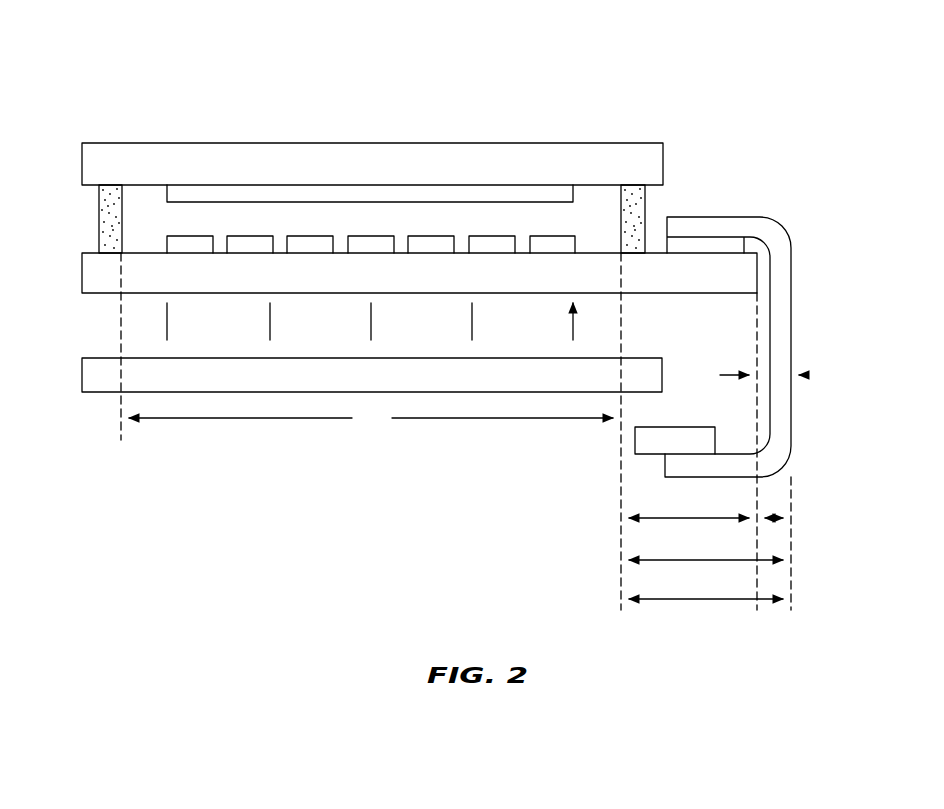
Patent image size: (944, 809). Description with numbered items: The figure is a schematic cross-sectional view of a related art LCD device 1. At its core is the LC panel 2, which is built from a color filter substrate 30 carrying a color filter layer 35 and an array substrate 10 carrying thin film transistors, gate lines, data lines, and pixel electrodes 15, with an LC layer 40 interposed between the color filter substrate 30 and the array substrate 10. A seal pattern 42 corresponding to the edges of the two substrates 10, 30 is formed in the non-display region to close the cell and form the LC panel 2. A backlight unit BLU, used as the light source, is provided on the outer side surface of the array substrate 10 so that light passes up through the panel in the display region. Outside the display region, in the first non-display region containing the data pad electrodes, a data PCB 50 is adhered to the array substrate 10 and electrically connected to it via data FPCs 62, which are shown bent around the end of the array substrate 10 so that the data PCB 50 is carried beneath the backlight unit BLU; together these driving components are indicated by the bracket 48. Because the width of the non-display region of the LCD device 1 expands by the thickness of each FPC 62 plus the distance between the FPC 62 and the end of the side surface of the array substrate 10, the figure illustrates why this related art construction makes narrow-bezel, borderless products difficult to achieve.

The LCD device 1 is at (617, 106).
The LC panel 2 is at (82, 143).
The array substrate 10 is at (697, 278).
The pixel electrodes 15 is at (190, 252).
The color filter substrate 30 is at (653, 170).
The color filter layer 35 is at (225, 193).
The LC layer 40 is at (608, 207).
The seal pattern 42 is at (644, 210).
The driving circuit unit 48 is at (542, 482).
The data PCB 50 is at (645, 432).
The data FPCs 62 is at (665, 468).
The backlight unit BLU is at (656, 374).